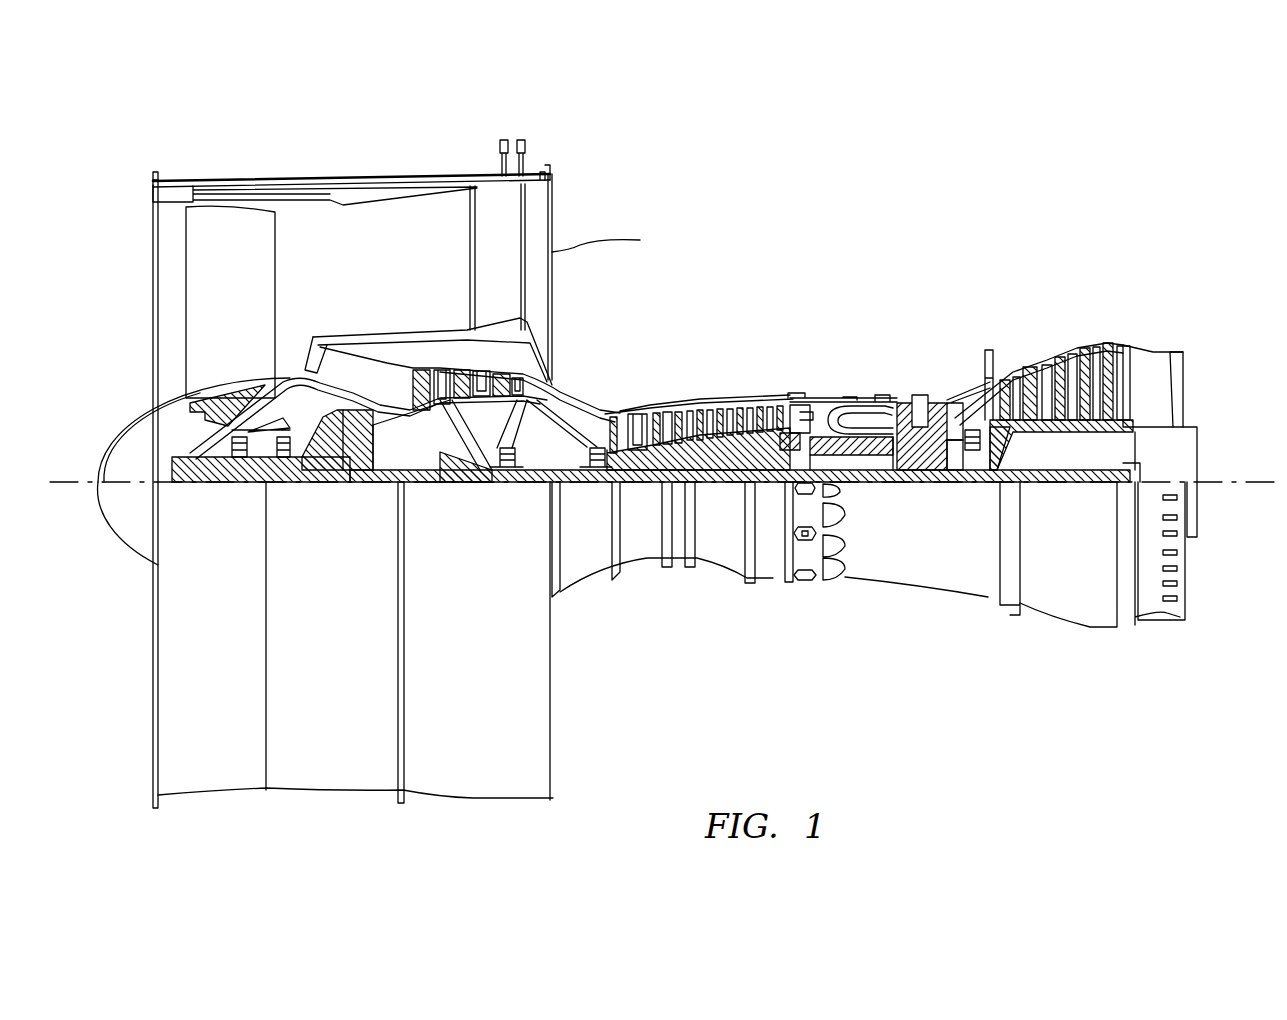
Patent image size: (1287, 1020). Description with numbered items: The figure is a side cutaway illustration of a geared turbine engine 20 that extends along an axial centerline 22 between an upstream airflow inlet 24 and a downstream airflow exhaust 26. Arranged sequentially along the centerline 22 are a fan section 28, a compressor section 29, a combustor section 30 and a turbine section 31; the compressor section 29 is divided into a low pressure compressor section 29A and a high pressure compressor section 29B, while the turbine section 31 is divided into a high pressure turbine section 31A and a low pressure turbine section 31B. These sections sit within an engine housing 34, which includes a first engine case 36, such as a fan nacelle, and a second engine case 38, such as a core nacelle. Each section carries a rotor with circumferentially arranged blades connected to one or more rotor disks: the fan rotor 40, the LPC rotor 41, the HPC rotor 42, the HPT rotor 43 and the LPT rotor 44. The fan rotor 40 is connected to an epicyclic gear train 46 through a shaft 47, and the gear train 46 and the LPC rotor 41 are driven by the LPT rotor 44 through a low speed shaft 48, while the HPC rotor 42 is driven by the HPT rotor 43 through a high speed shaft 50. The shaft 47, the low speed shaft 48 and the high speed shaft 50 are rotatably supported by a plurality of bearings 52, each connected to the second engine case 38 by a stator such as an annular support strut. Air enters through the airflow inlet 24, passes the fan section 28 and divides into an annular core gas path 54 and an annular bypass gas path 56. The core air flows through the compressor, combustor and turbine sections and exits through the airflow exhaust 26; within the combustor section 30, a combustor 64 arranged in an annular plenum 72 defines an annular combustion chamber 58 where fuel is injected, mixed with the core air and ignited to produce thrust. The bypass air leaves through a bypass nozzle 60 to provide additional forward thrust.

The turbine engine 20 is at (122, 150).
The axial centerline 22 is at (1252, 478).
The airflow inlet 24 is at (153, 228).
The airflow exhaust 26 is at (1185, 385).
The fan section 28 is at (316, 158).
The compressor section 29 is at (770, 90).
The low pressure compressor section 29A is at (554, 140).
The high pressure compressor section 29B is at (771, 308).
The combustor section 30 is at (892, 308).
The turbine section 31 is at (1148, 244).
The high pressure turbine section 31A is at (971, 308).
The low pressure turbine section 31B is at (1148, 308).
The engine housing 34 is at (565, 608).
The first engine case 36 is at (482, 800).
The second engine case 38 is at (772, 596).
The fan rotor 40 is at (177, 408).
The LPC rotor 41 is at (452, 420).
The HPC rotor 42 is at (728, 480).
The HPT rotor 43 is at (923, 480).
The LPT rotor 44 is at (1062, 440).
The gear train 46 is at (358, 485).
The shaft 47 is at (195, 497).
The low speed shaft 48 is at (1073, 486).
The high speed shaft 50 is at (858, 484).
The bearings 52 is at (258, 482).
The core gas path 54 is at (568, 402).
The bypass gas path 56 is at (378, 276).
The combustion chamber 58 is at (848, 418).
The bypass nozzle 60 is at (556, 215).
The combustor 64 is at (878, 412).
The annular plenum 72 is at (818, 402).